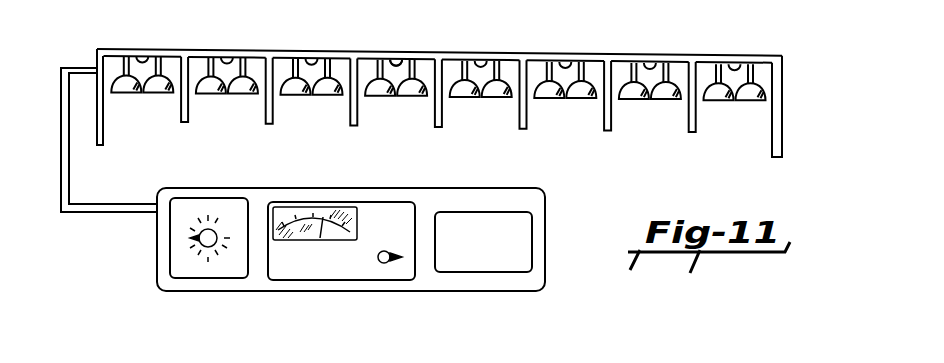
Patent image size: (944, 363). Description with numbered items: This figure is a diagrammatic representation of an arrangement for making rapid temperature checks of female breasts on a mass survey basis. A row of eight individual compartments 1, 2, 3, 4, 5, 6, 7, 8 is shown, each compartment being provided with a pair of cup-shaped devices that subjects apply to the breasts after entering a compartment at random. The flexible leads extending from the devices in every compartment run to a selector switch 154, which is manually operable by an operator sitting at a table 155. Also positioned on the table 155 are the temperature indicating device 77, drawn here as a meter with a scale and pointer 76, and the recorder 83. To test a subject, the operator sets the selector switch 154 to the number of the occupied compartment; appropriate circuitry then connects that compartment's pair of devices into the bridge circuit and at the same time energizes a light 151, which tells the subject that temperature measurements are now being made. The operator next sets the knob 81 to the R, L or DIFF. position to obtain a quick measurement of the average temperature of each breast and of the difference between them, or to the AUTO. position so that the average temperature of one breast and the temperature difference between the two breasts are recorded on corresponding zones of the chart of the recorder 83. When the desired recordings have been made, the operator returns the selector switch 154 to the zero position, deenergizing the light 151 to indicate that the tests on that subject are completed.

The compartment 1 is at (143, 91).
The compartment 2 is at (227, 61).
The compartment 3 is at (312, 92).
The compartment 4 is at (396, 62).
The compartment 5 is at (481, 62).
The compartment 6 is at (565, 63).
The compartment 7 is at (650, 65).
The compartment 8 is at (735, 66).
The light 151 is at (413, 61).
The selector switch 154 is at (168, 240).
The table 155 is at (547, 212).
The recorder 83 is at (546, 241).
The meter 76 is at (297, 213).
The temperature indicating device 77 is at (328, 200).
The knob 81 is at (385, 263).